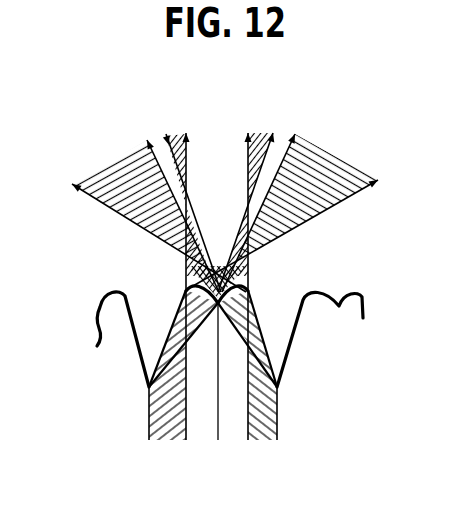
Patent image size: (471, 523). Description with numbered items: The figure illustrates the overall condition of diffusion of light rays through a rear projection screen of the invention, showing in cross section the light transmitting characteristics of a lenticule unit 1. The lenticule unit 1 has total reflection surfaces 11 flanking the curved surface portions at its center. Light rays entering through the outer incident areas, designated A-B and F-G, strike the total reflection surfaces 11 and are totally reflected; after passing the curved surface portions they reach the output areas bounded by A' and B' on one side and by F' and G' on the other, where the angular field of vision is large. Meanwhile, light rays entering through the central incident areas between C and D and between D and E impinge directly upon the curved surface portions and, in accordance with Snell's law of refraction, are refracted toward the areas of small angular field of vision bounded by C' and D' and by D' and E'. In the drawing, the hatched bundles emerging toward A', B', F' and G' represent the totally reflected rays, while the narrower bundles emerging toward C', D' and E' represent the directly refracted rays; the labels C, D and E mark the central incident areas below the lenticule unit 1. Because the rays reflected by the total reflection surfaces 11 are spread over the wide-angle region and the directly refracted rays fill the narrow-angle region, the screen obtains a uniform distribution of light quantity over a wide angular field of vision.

The lenticule unit 1 is at (340, 290).
The total reflection surface 11 is at (174, 323).
The area C is at (171, 398).
The area D is at (219, 391).
The area E is at (259, 398).
The area A' is at (273, 199).
The area B' is at (298, 224).
The area C' is at (195, 269).
The area D' is at (222, 195).
The area E' is at (249, 269).
The area F' is at (145, 225).
The area G' is at (172, 200).